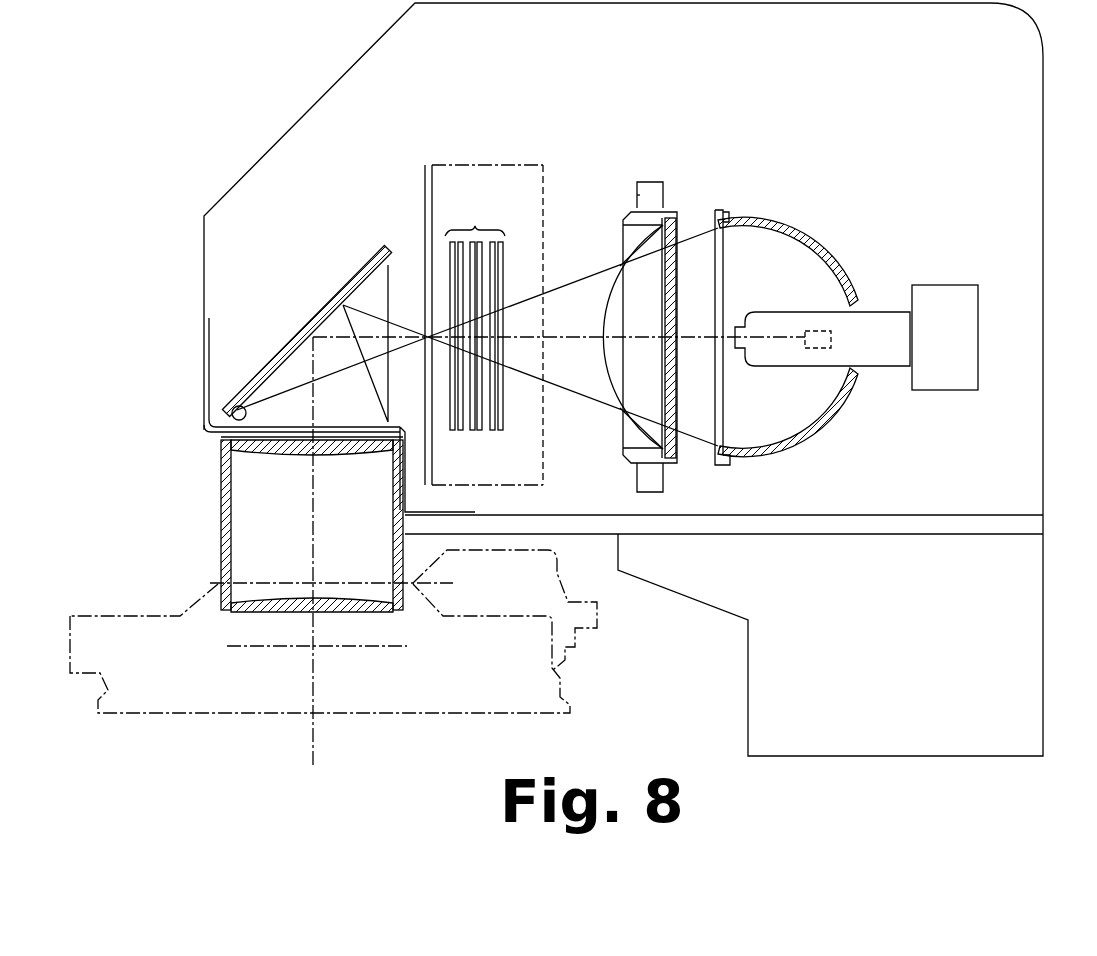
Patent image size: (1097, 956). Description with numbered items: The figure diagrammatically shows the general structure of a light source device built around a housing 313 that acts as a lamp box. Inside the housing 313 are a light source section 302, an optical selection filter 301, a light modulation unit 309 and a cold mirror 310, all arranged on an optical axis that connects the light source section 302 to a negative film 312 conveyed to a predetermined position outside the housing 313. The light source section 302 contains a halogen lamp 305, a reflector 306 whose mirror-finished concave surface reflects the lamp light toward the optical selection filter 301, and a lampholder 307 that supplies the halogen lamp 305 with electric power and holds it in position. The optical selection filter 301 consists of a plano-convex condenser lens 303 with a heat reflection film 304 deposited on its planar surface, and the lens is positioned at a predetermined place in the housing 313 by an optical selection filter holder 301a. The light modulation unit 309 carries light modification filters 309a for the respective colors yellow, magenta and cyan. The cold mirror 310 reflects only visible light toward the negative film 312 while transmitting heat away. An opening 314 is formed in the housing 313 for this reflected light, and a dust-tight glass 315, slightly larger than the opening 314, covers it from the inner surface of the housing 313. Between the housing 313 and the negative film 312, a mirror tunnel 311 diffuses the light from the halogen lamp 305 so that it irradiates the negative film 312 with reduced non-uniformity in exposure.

The optical selection filter 301 is at (649, 168).
The optical selection filter holder 301a is at (637, 195).
The light source section 302 is at (830, 427).
The condenser lens 303 is at (620, 300).
The heat reflection film 304 is at (678, 235).
The halogen lamp 305 is at (884, 318).
The reflector 306 is at (792, 242).
The lampholder 307 is at (946, 288).
The light modulation unit 309 is at (522, 165).
The light modification filter 309a is at (474, 328).
The cold mirror 310 is at (373, 258).
The mirror tunnel 311 is at (210, 497).
The negative film 312 is at (283, 650).
The housing 313 is at (1045, 185).
The opening 314 is at (233, 408).
The dust-tight glass 315 is at (340, 430).